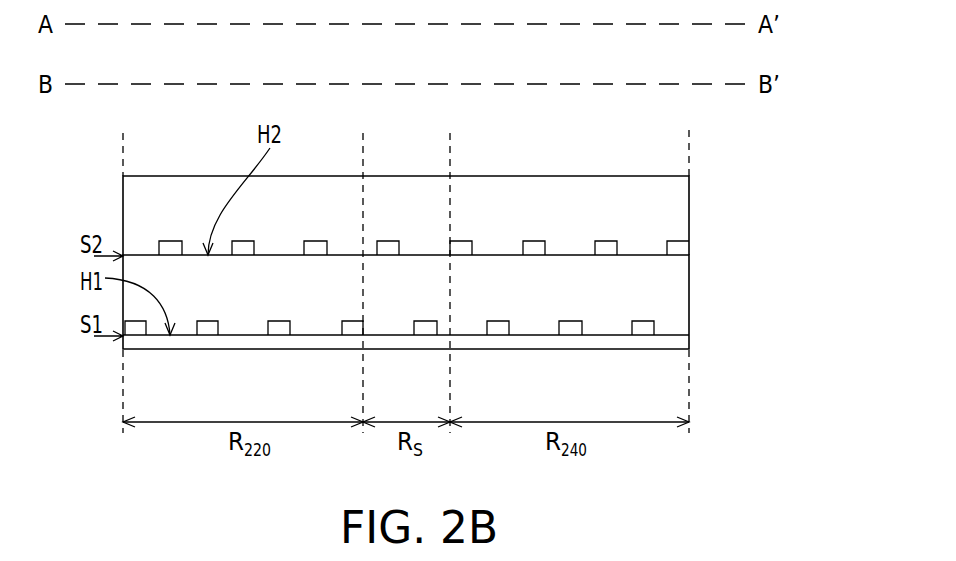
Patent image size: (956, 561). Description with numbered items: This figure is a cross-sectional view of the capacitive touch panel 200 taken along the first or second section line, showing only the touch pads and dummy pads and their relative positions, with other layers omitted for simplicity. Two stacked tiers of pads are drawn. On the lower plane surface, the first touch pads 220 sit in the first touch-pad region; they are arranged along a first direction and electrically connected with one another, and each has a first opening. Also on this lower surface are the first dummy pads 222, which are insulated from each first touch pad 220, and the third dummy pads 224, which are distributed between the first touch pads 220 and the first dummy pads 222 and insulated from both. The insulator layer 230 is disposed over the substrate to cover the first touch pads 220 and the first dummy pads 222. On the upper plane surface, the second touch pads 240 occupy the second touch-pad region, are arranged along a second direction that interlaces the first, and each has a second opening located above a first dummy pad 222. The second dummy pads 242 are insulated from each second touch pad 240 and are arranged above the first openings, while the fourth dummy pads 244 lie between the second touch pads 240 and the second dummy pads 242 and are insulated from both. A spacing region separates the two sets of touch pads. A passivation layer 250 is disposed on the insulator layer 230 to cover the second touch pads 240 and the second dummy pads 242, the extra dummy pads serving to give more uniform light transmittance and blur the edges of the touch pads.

The capacitive touch panel 200 is at (443, 316).
The first touch pads 220 is at (350, 327).
The first dummy pads 222 is at (570, 327).
The third dummy pads 224 is at (427, 327).
The insulator layer 230 is at (675, 298).
The second touch pads 240 is at (463, 247).
The second dummy pads 242 is at (170, 247).
The fourth dummy pads 244 is at (386, 247).
The passivation layer 250 is at (682, 218).